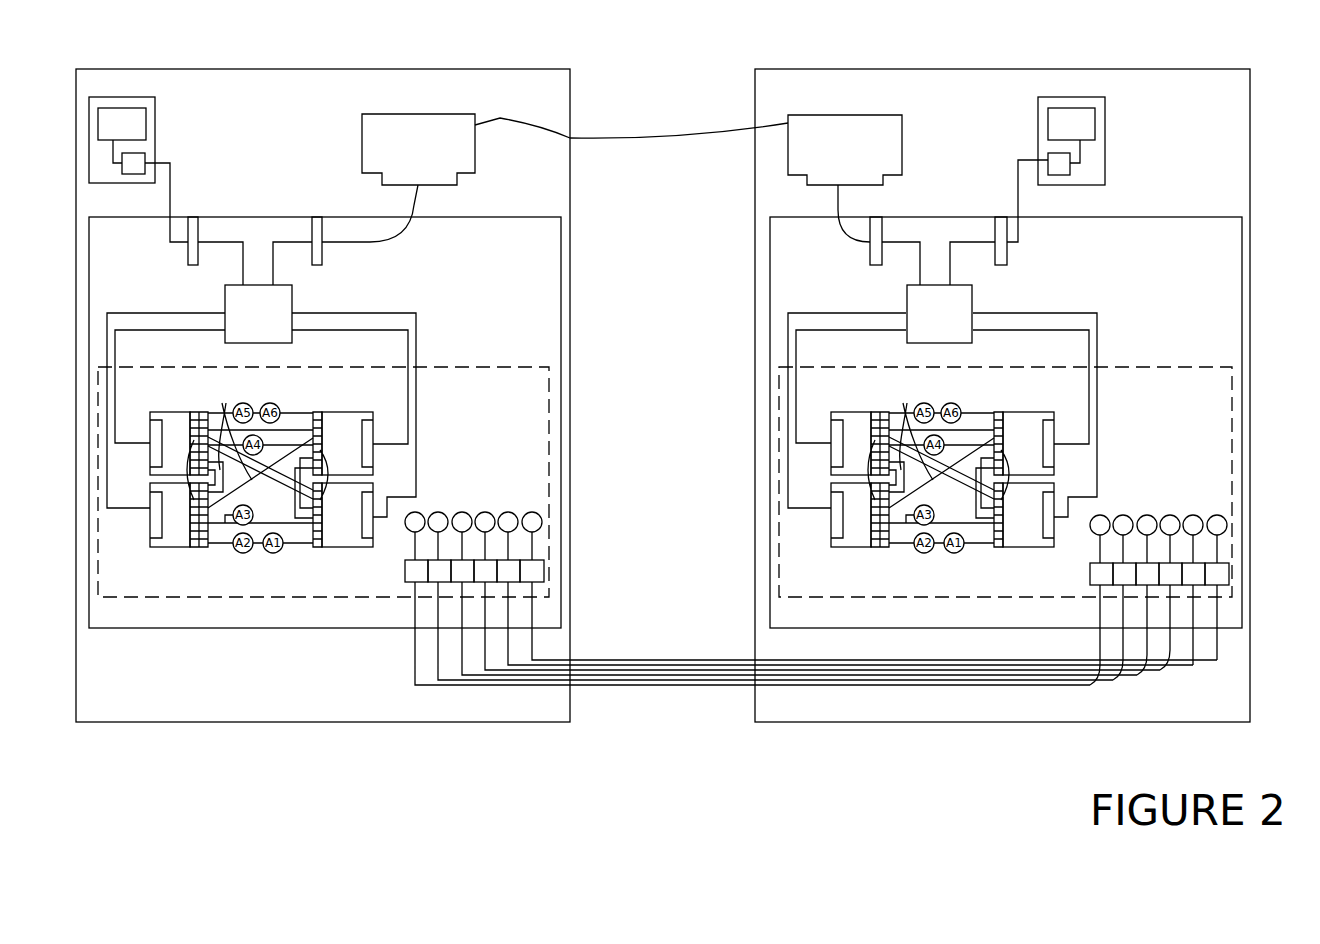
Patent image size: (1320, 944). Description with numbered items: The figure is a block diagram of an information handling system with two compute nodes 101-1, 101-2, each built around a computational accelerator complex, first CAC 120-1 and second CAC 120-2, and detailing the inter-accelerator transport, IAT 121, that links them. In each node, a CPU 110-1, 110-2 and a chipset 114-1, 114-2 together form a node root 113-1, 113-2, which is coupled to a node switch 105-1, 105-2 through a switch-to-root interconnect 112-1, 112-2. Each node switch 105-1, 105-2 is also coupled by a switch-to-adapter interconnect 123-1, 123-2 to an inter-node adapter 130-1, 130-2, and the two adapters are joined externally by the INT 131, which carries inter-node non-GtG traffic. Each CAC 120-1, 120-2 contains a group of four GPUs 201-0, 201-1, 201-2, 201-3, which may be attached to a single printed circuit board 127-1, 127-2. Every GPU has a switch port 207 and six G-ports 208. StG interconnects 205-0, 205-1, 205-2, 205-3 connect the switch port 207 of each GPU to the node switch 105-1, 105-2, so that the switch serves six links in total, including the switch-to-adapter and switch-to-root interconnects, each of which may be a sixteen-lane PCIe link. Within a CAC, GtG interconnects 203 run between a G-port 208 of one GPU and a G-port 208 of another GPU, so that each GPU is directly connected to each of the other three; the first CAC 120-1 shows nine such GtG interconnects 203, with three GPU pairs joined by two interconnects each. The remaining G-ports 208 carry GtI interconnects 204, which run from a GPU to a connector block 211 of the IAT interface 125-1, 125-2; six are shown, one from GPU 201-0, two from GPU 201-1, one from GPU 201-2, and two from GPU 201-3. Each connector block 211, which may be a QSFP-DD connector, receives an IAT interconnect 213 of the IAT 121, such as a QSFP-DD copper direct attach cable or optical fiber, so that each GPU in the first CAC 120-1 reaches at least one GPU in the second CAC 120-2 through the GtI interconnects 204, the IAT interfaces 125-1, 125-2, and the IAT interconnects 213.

The compute node 101-1 is at (100, 69).
The compute node 101-2 is at (1082, 69).
The CPU 110-1 is at (146, 118).
The CPU 110-2 is at (1090, 118).
The node root 113-1 is at (155, 160).
The node root 113-2 is at (1105, 160).
The chipset 114-1 is at (132, 174).
The chipset 114-2 is at (1058, 176).
The inter-node adapter 130-1 is at (372, 114).
The inter-node adapter 130-2 is at (840, 115).
The INT 131 is at (651, 160).
The IAT 121 is at (659, 728).
The switch-to-adapter interconnect 123-1 is at (300, 242).
The switch-to-adapter interconnect 123-2 is at (890, 242).
The switch-to-root interconnect 112-1 is at (240, 268).
The switch-to-root interconnect 112-2 is at (955, 270).
The node switch 105-1 is at (278, 324).
The node switch 105-2 is at (959, 324).
The StG interconnect 205-0 is at (388, 331).
The StG interconnect 205-1 is at (360, 313).
The StG interconnect 205-2 is at (120, 313).
The StG interconnect 205-3 is at (172, 331).
The GPU 201-0 is at (350, 547).
The GPU 201-1 is at (358, 412).
The GPU 201-2 is at (170, 412).
The GPU 201-3 is at (194, 547).
The switch port 207 is at (152, 464).
The G-port 208 is at (196, 420).
The GtG interconnect 203 is at (601, 465).
The GtI interconnect 204 is at (290, 445).
The CAC 120-1 is at (425, 367).
The CAC 120-2 is at (1108, 367).
The IAT interface 125-1 is at (396, 578).
The IAT interface 125-2 is at (1078, 581).
The printed circuit board 127-1 is at (176, 628).
The printed circuit board 127-2 is at (924, 628).
The connector block 211 is at (487, 558).
The IAT interconnect 213 is at (440, 668).